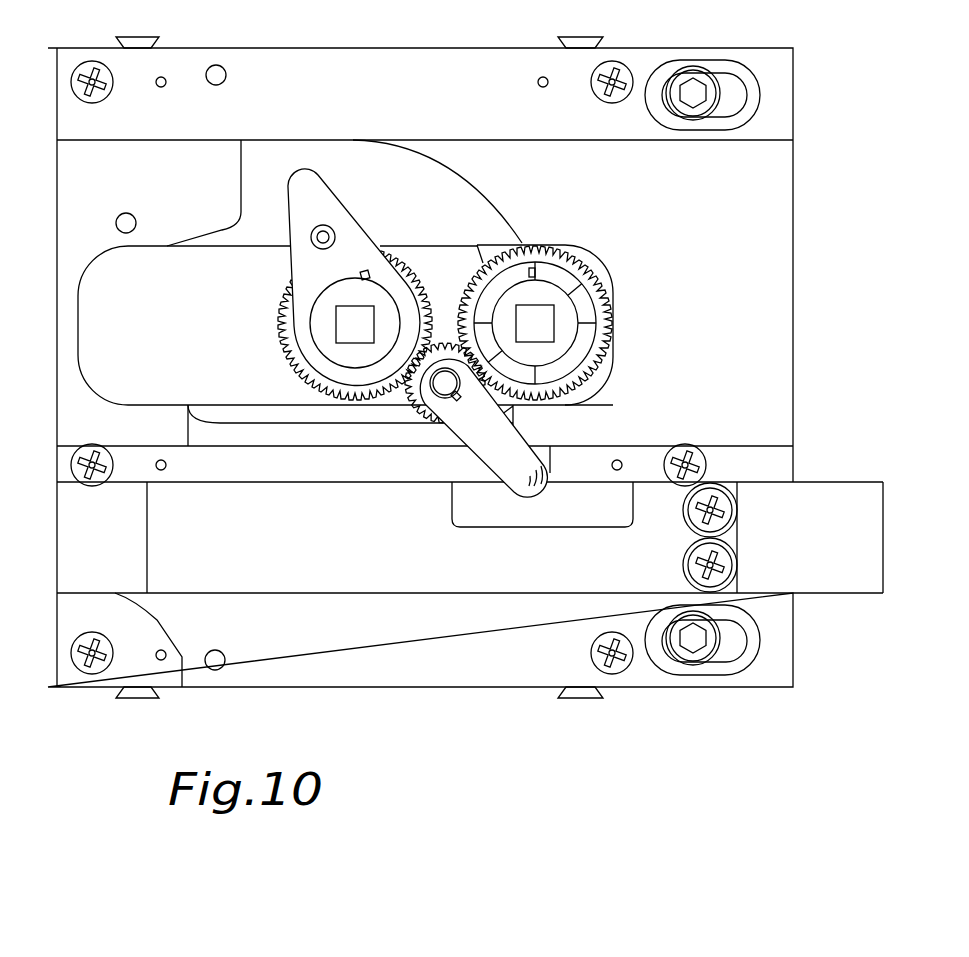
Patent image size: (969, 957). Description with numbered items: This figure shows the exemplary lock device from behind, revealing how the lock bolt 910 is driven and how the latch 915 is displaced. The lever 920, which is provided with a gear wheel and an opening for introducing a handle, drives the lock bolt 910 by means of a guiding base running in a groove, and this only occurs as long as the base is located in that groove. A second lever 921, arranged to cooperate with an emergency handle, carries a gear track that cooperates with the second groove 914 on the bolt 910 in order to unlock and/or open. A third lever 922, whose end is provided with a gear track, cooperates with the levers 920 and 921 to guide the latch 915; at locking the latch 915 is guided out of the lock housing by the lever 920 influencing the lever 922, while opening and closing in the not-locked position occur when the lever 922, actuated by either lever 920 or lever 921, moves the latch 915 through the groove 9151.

The lock bolt 910 is at (735, 212).
The second groove 914 is at (367, 173).
The latch 915 is at (828, 510).
The groove 9151 is at (573, 512).
The lever 920 is at (567, 325).
The second lever 921 is at (308, 265).
The third lever 922 is at (480, 427).